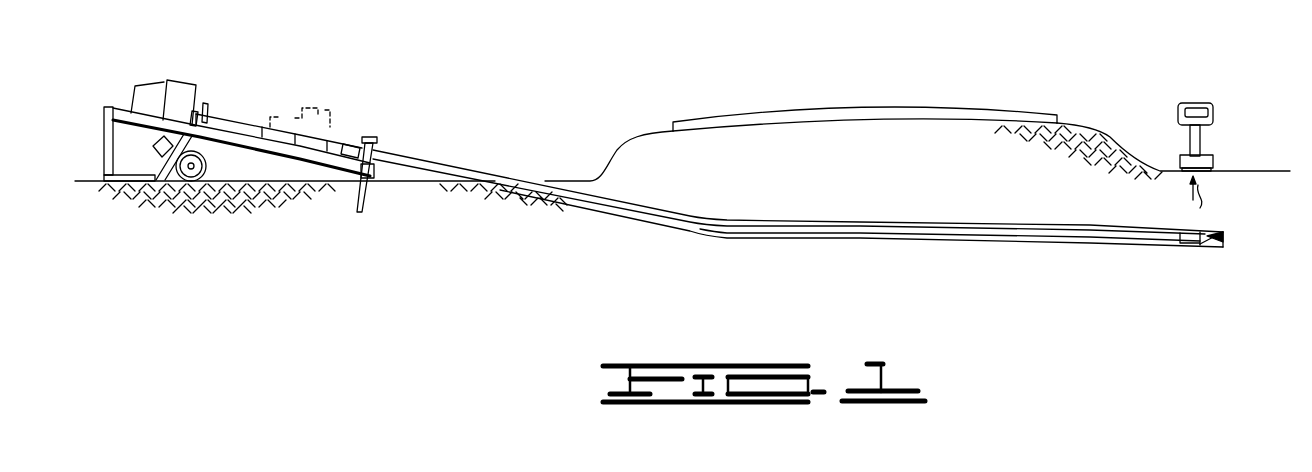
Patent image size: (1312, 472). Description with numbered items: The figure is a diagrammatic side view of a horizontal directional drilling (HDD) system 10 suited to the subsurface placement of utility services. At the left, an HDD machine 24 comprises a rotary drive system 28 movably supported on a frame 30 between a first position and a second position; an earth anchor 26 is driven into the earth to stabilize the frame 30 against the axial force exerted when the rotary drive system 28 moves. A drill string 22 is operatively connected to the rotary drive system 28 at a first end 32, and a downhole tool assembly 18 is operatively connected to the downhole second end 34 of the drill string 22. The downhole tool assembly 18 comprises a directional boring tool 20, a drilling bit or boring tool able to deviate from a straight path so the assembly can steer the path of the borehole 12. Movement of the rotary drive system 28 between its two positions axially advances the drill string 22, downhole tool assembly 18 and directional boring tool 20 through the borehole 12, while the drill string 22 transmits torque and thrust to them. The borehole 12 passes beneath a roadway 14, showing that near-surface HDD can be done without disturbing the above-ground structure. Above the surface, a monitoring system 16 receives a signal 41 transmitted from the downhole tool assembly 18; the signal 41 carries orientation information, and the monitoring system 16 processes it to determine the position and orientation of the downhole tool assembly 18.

The HDD system 10 is at (456, 122).
The borehole 12 is at (1057, 221).
The roadway 14 is at (816, 108).
The monitoring system 16 is at (1203, 103).
The downhole tool assembly 18 is at (1200, 245).
The directional boring tool 20 is at (1218, 246).
The drill string 22 is at (815, 237).
The HDD machine 24 is at (178, 77).
The earth anchor 26 is at (364, 200).
The rotary drive system 28 is at (192, 80).
The frame 30 is at (103, 128).
The first end 32 is at (254, 113).
The second end 34 is at (1134, 243).
The signal 41 is at (1203, 193).